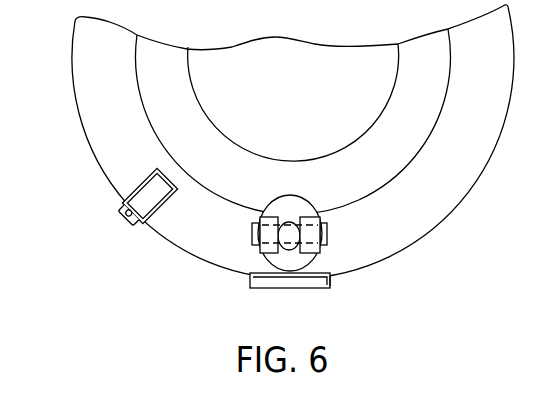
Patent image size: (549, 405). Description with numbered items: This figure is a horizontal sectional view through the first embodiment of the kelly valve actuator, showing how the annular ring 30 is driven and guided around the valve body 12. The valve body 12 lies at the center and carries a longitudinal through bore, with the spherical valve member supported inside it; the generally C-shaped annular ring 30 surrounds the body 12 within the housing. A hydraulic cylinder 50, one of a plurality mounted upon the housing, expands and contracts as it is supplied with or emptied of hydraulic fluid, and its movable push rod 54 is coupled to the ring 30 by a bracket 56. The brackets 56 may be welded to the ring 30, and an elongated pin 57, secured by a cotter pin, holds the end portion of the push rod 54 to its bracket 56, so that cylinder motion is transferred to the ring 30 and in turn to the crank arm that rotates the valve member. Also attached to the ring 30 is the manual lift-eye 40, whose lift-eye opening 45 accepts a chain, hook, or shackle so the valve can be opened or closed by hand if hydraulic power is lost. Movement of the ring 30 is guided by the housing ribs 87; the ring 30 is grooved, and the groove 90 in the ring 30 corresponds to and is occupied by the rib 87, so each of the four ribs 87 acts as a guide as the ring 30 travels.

The valve body 12 is at (377, 123).
The annular ring 30 is at (88, 75).
The manual lift-eye 40 is at (125, 206).
The lift-eye opening 45 is at (128, 220).
The hydraulic cylinder 50 is at (313, 258).
The push rod 54 is at (290, 222).
The bracket 56 is at (260, 219).
The elongated pin 57 is at (327, 233).
The housing rib 87 is at (253, 283).
The groove 90 is at (331, 280).